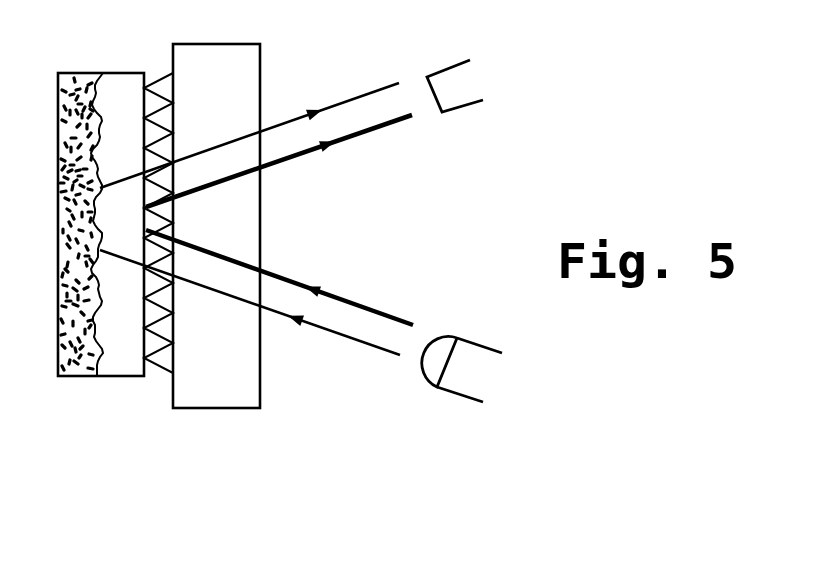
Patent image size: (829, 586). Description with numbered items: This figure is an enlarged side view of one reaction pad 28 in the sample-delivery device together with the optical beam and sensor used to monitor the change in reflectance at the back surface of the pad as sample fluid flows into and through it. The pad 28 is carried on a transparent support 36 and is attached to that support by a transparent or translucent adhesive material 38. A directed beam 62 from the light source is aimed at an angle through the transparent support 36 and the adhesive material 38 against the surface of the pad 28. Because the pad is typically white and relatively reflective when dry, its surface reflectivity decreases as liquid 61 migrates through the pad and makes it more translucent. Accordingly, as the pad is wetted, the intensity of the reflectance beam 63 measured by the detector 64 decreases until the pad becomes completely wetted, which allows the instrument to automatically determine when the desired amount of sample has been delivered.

The reaction pad 28 is at (132, 83).
The transparent support 36 is at (240, 385).
The adhesive material 38 is at (158, 80).
The liquid 61 is at (68, 82).
The beam 62 is at (337, 297).
The reflectance beam 63 is at (303, 152).
The detector 64 is at (472, 82).